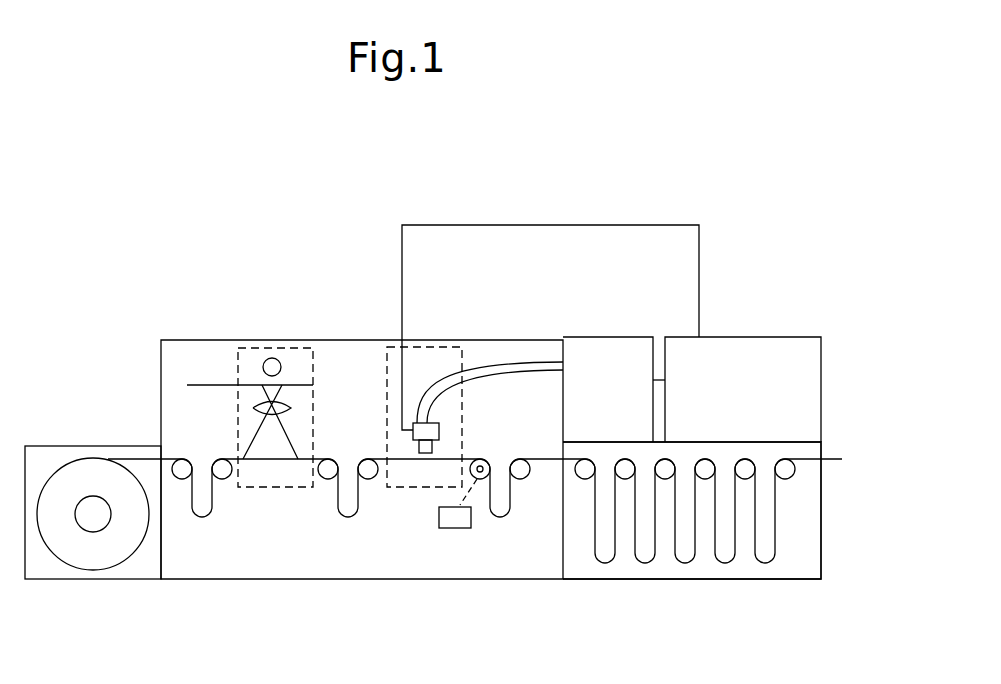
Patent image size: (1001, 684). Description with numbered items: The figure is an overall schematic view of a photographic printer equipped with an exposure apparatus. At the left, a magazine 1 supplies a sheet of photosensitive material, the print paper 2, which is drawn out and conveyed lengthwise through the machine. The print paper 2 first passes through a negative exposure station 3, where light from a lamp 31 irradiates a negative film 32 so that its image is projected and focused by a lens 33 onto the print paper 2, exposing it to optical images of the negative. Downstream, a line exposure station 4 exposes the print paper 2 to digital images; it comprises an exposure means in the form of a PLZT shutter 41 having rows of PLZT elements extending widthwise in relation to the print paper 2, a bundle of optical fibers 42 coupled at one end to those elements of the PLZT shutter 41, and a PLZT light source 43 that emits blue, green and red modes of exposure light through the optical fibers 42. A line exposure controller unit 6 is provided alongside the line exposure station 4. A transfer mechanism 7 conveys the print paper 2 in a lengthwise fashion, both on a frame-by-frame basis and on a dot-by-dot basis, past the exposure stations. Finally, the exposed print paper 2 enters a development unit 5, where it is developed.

The magazine 1 is at (65, 446).
The print paper 2 is at (138, 459).
The negative exposure station 3 is at (260, 339).
The lamp 31 is at (266, 358).
The negative film 32 is at (193, 384).
The lens 33 is at (290, 401).
The line exposure station 4 is at (543, 356).
The PLZT shutter 41 is at (418, 421).
The optical fibers 42 is at (495, 364).
The PLZT light source 43 is at (600, 337).
The development unit 5 is at (640, 579).
The line exposure controller unit 6 is at (722, 337).
The transfer mechanism 7 is at (455, 520).